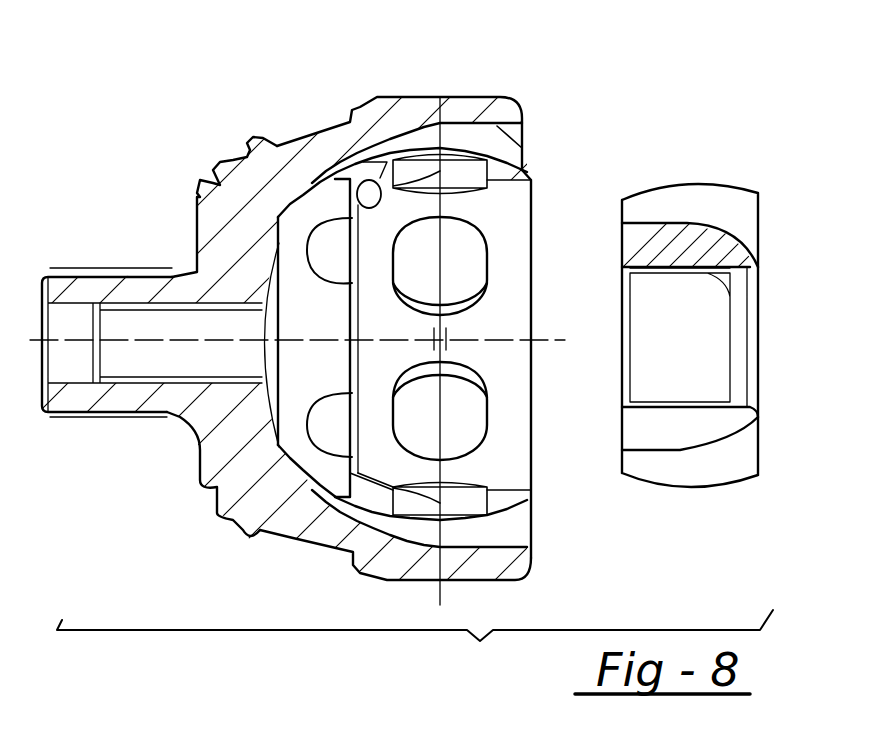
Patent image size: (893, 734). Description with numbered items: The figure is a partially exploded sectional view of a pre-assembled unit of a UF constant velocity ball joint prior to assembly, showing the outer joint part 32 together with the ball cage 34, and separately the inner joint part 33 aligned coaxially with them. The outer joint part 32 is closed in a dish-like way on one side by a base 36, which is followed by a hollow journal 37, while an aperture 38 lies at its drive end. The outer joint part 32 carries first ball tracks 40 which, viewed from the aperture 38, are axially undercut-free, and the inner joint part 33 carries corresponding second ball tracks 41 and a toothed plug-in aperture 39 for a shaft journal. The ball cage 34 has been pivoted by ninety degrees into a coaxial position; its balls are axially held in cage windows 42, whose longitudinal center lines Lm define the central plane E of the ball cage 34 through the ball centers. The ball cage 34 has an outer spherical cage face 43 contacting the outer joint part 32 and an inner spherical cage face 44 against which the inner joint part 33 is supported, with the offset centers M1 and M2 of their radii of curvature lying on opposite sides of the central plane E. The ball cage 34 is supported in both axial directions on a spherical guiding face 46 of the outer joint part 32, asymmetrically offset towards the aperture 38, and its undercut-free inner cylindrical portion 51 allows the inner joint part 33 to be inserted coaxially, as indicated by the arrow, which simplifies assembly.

The outer joint part 32 is at (275, 162).
The inner joint part 33 is at (663, 234).
The ball cage 34 is at (495, 128).
The base 36 is at (210, 187).
The hollow journal 37 is at (110, 282).
The aperture 38 is at (540, 158).
The toothed plug-in aperture 39 is at (730, 295).
The first ball tracks 40 is at (482, 137).
The second ball tracks 41 is at (737, 200).
The cage window 42 is at (467, 146).
The outer spherical cage face 43 is at (358, 174).
The inner spherical cage face 44 is at (374, 194).
The spherical guiding face 46 is at (370, 504).
The inner cylindrical portion 51 is at (493, 492).
The longitudinal center lines of the cage windows Lm is at (437, 150).
The center of radius of curvature of the spherical outer face M1 is at (448, 338).
The center of radius of curvature of the spherical inner face M2 is at (432, 338).
The central plane E is at (410, 478).